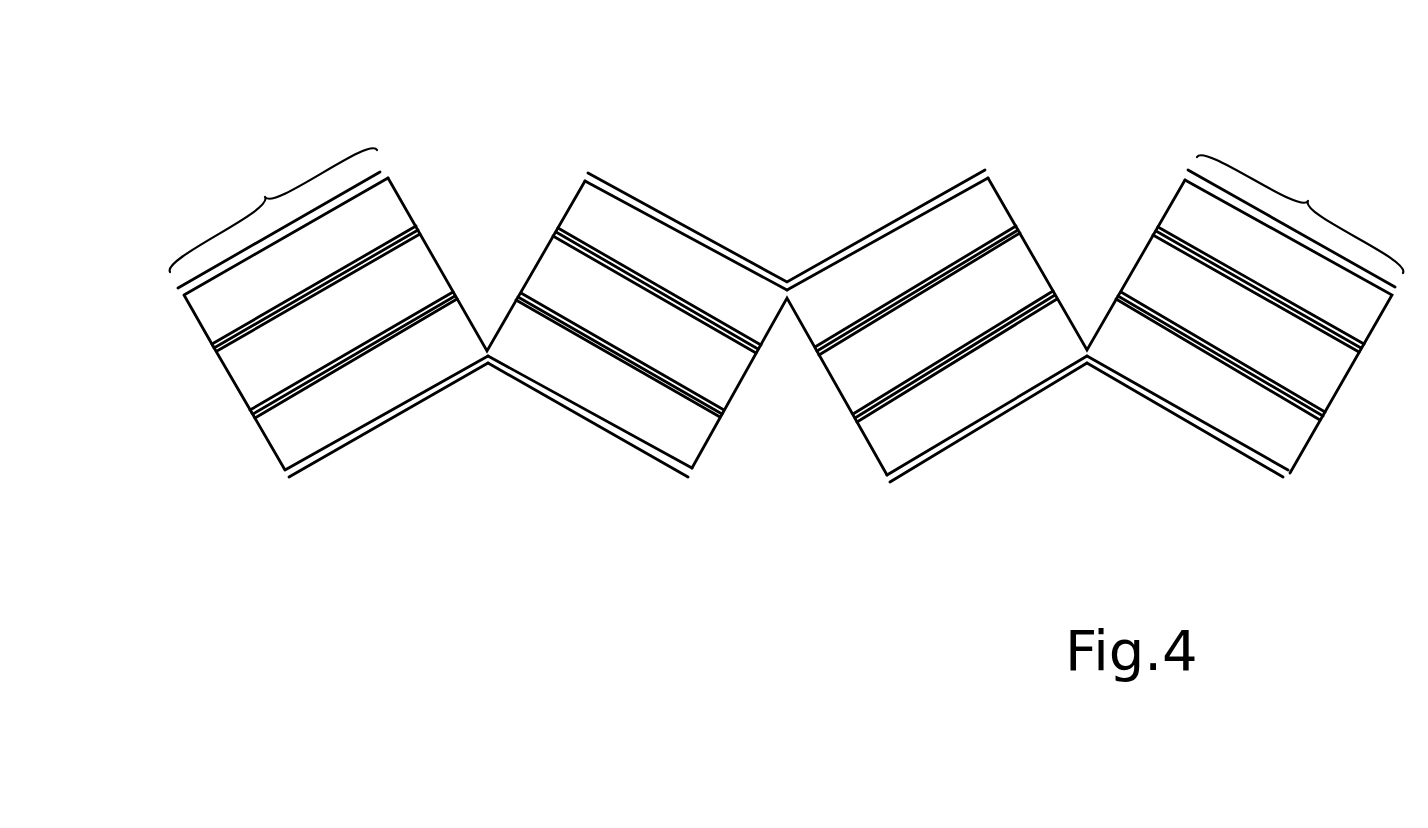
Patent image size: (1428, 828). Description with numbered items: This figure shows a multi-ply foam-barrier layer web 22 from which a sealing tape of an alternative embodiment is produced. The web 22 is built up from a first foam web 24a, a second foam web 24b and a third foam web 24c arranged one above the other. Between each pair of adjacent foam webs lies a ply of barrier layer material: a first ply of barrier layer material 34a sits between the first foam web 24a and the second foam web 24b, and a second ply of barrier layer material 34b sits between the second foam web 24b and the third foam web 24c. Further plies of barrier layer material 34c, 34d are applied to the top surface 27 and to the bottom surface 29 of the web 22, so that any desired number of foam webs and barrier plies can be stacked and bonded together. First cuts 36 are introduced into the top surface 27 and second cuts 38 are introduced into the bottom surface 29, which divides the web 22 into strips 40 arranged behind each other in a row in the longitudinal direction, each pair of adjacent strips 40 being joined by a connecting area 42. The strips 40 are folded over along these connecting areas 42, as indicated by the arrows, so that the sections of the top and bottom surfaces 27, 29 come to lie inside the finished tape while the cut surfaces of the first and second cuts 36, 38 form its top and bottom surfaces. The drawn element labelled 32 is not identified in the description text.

The multi-ply foam-barrier layer web 22 is at (185, 368).
The first foam web 24a is at (280, 442).
The second foam web 24b is at (248, 375).
The third foam web 24c is at (202, 316).
The top surface 27 is at (390, 176).
The bottom surface 29 is at (290, 478).
The end panel 32 is at (1323, 373).
The first ply of barrier layer material 34a is at (460, 292).
The second ply of barrier layer material 34b is at (420, 230).
The ply of barrier layer material 34c is at (345, 450).
The ply of barrier layer material 34d is at (380, 171).
The first cuts 36 is at (510, 199).
The second cuts 38 is at (785, 420).
The strips 40 is at (787, 210).
The connecting area 42 is at (707, 235).